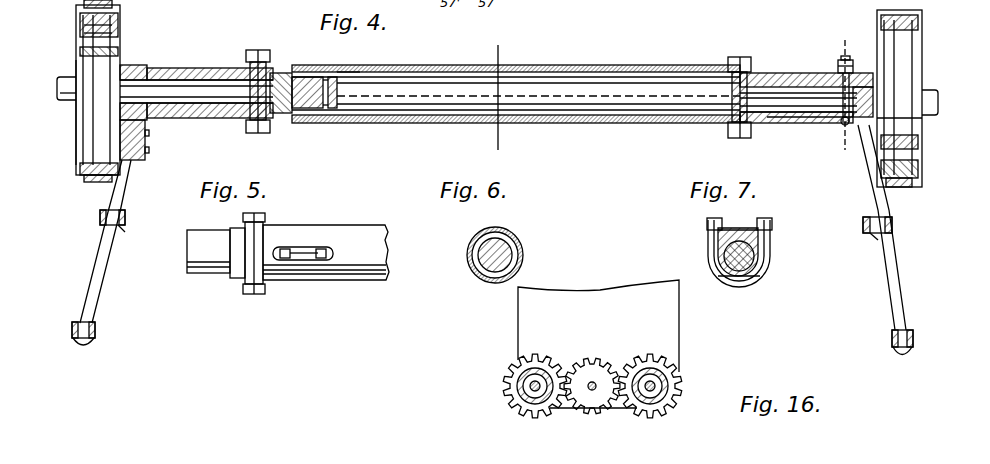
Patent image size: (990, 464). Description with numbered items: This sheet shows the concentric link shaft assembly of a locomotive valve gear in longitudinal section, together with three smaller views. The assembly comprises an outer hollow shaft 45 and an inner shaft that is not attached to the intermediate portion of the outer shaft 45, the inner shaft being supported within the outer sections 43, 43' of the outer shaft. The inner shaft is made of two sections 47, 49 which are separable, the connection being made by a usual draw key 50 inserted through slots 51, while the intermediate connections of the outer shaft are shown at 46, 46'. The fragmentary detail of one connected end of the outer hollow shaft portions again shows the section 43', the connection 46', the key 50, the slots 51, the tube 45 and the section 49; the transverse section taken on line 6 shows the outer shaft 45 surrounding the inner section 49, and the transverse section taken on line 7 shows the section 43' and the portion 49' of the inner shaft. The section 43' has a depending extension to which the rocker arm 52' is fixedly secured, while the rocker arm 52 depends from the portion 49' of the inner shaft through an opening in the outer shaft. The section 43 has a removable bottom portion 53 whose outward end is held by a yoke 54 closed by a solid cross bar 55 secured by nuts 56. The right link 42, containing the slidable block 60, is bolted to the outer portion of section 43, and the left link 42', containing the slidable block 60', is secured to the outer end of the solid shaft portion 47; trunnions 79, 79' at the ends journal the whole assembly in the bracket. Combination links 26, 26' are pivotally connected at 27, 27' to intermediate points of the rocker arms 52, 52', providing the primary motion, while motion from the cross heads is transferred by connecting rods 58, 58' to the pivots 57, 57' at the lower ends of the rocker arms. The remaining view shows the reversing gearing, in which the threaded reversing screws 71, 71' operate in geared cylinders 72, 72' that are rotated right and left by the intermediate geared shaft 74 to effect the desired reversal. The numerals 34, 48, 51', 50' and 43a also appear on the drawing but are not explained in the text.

In FIG. 4, the left link 42' is at (69, 90).
In FIG. 4, the slide block 60' is at (118, 91).
In FIG. 4, the wheel 34 is at (77, 150).
In FIG. 4, the trunnion 79' is at (40, 88).
In FIG. 4, the outer section of outer shaft 43' is at (196, 79).
In FIG. 5, the outer section of outer shaft 43' is at (216, 243).
In FIG. 7, the outer section of outer shaft 43' is at (711, 252).
In FIG. 4, the rocker arm 52' is at (120, 221).
In FIG. 4, the solid shaft portion of inner shaft 47 is at (205, 92).
In FIG. 4, the intermediate connection of outer shaft 46' is at (258, 75).
In FIG. 5, the intermediate connection of outer shaft 46' is at (242, 267).
In FIG. 4, the draw key 50 is at (282, 109).
In FIG. 5, the draw key 50 is at (290, 231).
In FIG. 4, the outer shaft 45 is at (565, 66).
In FIG. 5, the outer shaft 45 is at (326, 252).
In FIG. 6, the outer shaft 45 is at (523, 250).
In FIG. 4, the section of inner shaft 49 is at (516, 115).
In FIG. 5, the section of inner shaft 49 is at (303, 279).
In FIG. 6, the section of inner shaft 49 is at (489, 274).
In FIG. 4, the plug 48 is at (326, 112).
In FIG. 4, the slots 51 is at (317, 73).
In FIG. 5, the slots 51 is at (314, 230).
In FIG. 4, the ring 51' is at (313, 121).
In FIG. 4, the collar 50' is at (353, 56).
In FIG. 5, the collar 50' is at (341, 279).
In FIG. 4, the section line 6— 6 is at (497, 96).
In FIG. 4, the intermediate connection of outer shaft 46 is at (740, 85).
In FIG. 4, the outer section of outer shaft 43 is at (806, 88).
In FIG. 4, the portion of inner shaft section 49' is at (798, 123).
In FIG. 7, the portion of inner shaft section 49' is at (762, 256).
In FIG. 4, the removable bottom portion 53 is at (774, 123).
In FIG. 7, the removable bottom portion 53 is at (746, 280).
In FIG. 4, the cross bar 55 is at (852, 72).
In FIG. 7, the cross bar 55 is at (738, 219).
In FIG. 4, the nuts 56 is at (838, 62).
In FIG. 7, the nuts 56 is at (707, 224).
In FIG. 4, the yoke 54 is at (840, 125).
In FIG. 7, the yoke 54 is at (716, 278).
In FIG. 4, the section line 7— 7 is at (843, 94).
In FIG. 4, the right link 42 is at (912, 98).
In FIG. 4, the slide block 60 is at (914, 173).
In FIG. 4, the trunnion 79 is at (948, 102).
In FIG. 4, the flange 43a is at (884, 119).
In FIG. 4, the rocker arm 52 is at (865, 227).
In FIG. 4, the pivot connection 27 is at (892, 225).
In FIG. 4, the combination link 26 is at (860, 247).
In FIG. 4, the pivot connection 57 is at (880, 344).
In FIG. 4, the connecting rod 58 is at (899, 364).
In FIG. 4, the pivot connection 27' is at (86, 217).
In FIG. 4, the combination link 26' is at (131, 237).
In FIG. 4, the pivot connection 57' is at (98, 331).
In FIG. 4, the connecting rod 58' is at (82, 351).
In FIG. 16, the geared cylinder 72' is at (624, 348).
In FIG. 16, the geared cylinder 72 is at (522, 384).
In FIG. 16, the reversing screw 71' is at (500, 392).
In FIG. 16, the intermediate geared shaft 74 is at (592, 382).
In FIG. 16, the reversing screw 71 is at (669, 386).